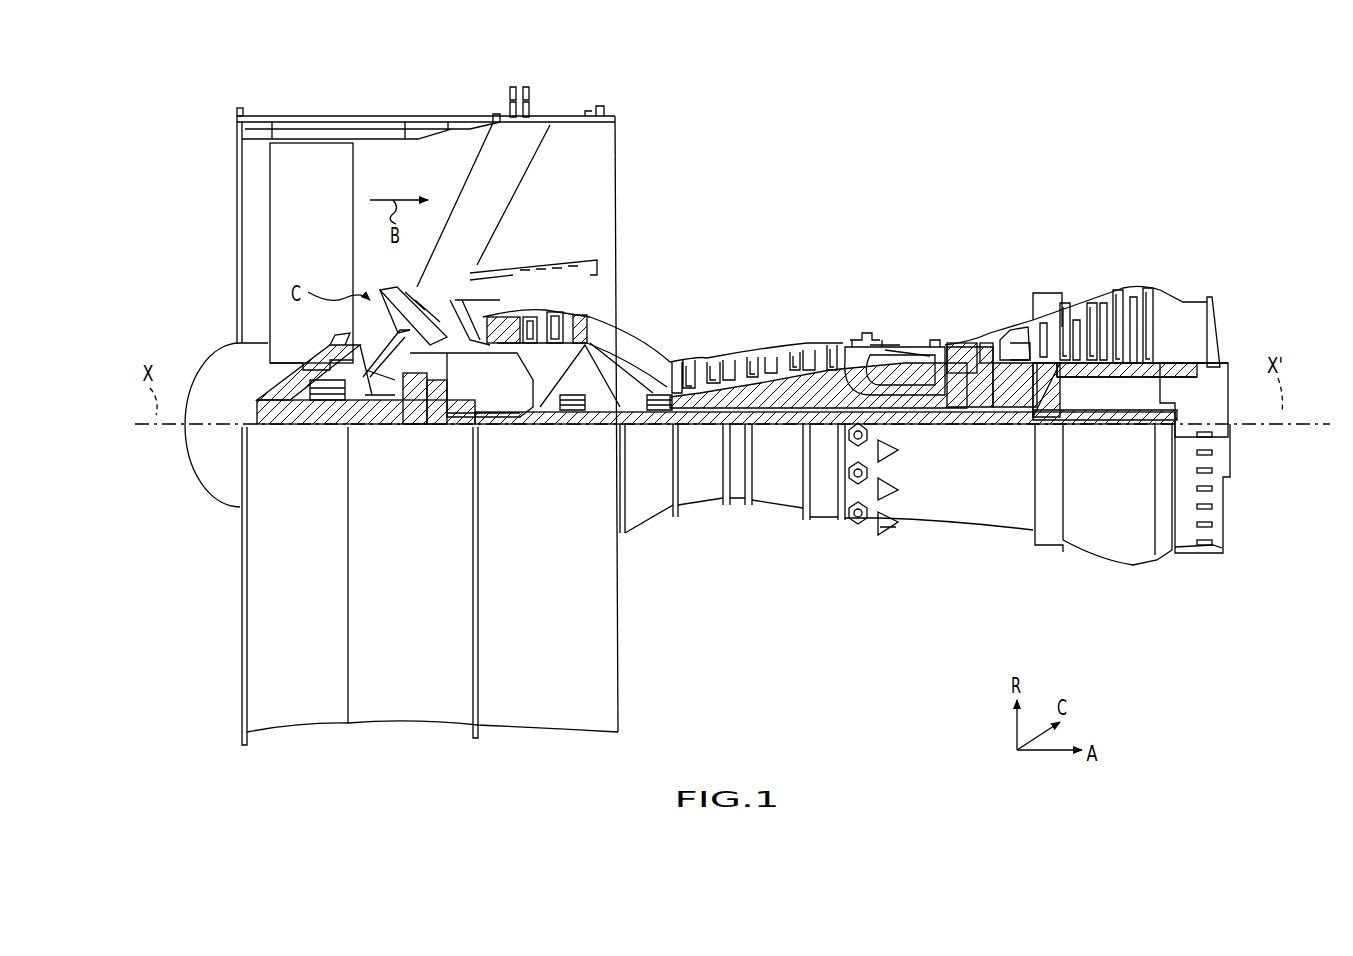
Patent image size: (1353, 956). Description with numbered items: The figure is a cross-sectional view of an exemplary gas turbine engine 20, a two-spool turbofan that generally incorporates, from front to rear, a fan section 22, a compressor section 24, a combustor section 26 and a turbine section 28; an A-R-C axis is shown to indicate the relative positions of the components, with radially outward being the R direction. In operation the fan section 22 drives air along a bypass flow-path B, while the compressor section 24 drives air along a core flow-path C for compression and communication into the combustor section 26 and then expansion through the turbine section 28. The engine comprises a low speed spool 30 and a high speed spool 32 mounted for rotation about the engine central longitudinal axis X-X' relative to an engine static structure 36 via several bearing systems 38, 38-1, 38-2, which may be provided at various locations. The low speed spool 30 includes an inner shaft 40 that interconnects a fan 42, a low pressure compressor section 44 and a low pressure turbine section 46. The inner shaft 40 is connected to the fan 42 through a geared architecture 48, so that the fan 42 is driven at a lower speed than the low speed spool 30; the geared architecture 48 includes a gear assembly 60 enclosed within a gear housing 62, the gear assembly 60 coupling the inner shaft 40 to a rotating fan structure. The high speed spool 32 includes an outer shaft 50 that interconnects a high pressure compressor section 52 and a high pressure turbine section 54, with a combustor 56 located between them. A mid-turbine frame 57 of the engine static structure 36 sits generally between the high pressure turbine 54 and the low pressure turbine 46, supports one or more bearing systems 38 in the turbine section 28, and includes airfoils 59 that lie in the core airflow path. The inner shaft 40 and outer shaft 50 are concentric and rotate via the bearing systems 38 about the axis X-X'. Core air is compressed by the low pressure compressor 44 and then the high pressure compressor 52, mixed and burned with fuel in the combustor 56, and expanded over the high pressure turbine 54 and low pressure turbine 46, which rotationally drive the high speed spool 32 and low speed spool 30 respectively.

The gas turbine engine 20 is at (952, 153).
The fan section 22 is at (468, 90).
The compressor section 24 is at (478, 226).
The combustor section 26 is at (950, 226).
The turbine section 28 is at (1160, 226).
The low speed spool 30 is at (790, 450).
The high speed spool 32 is at (815, 390).
The engine static structure 36 is at (228, 737).
The bearing system 38 is at (1012, 415).
The bearing system 38-1 is at (325, 412).
The bearing system 38-2 is at (570, 410).
The inner shaft 40 is at (640, 430).
The fan 42 is at (316, 242).
The low pressure compressor section 44 is at (558, 318).
The low pressure turbine section 46 is at (1097, 320).
The geared architecture 48 is at (440, 440).
The outer shaft 50 is at (895, 408).
The high pressure compressor section 52 is at (778, 350).
The high pressure turbine section 54 is at (968, 337).
The combustor 56 is at (900, 355).
The mid-turbine frame 57 is at (1005, 330).
The airfoils 59 is at (1030, 345).
The gear assembly 60 is at (452, 402).
The gear housing 62 is at (455, 370).